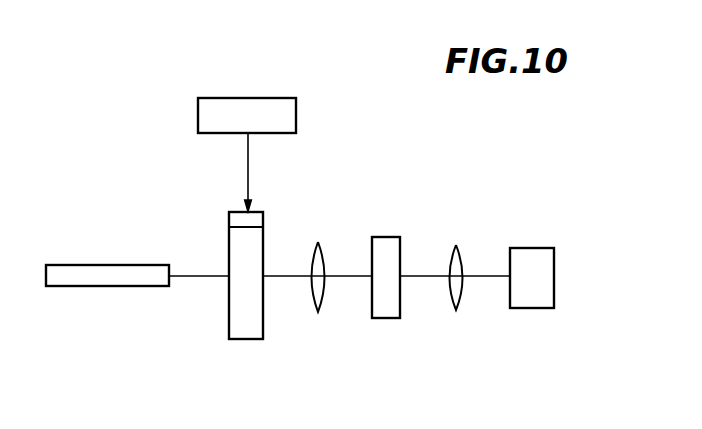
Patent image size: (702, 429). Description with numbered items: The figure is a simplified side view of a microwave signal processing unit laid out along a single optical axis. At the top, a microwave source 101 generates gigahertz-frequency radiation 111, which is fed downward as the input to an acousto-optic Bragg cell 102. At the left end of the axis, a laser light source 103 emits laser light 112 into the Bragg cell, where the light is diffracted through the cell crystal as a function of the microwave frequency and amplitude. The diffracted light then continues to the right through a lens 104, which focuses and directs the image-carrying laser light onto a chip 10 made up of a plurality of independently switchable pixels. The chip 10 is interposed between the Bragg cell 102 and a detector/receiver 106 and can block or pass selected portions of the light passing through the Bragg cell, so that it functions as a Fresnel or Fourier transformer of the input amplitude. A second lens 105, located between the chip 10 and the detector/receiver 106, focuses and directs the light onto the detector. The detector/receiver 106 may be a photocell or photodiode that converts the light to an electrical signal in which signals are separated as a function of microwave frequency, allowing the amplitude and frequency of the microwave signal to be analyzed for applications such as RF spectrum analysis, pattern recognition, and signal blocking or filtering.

The microwave source 101 is at (233, 97).
The gigahertz frequency radiation 111 is at (248, 166).
The acousto-optic Bragg cell 102 is at (250, 340).
The laser light 112 is at (190, 275).
The laser light source 103 is at (103, 288).
The lens 104 is at (318, 242).
The chip 10 is at (395, 320).
The lens 105 is at (456, 245).
The detector/receiver 106 is at (554, 265).